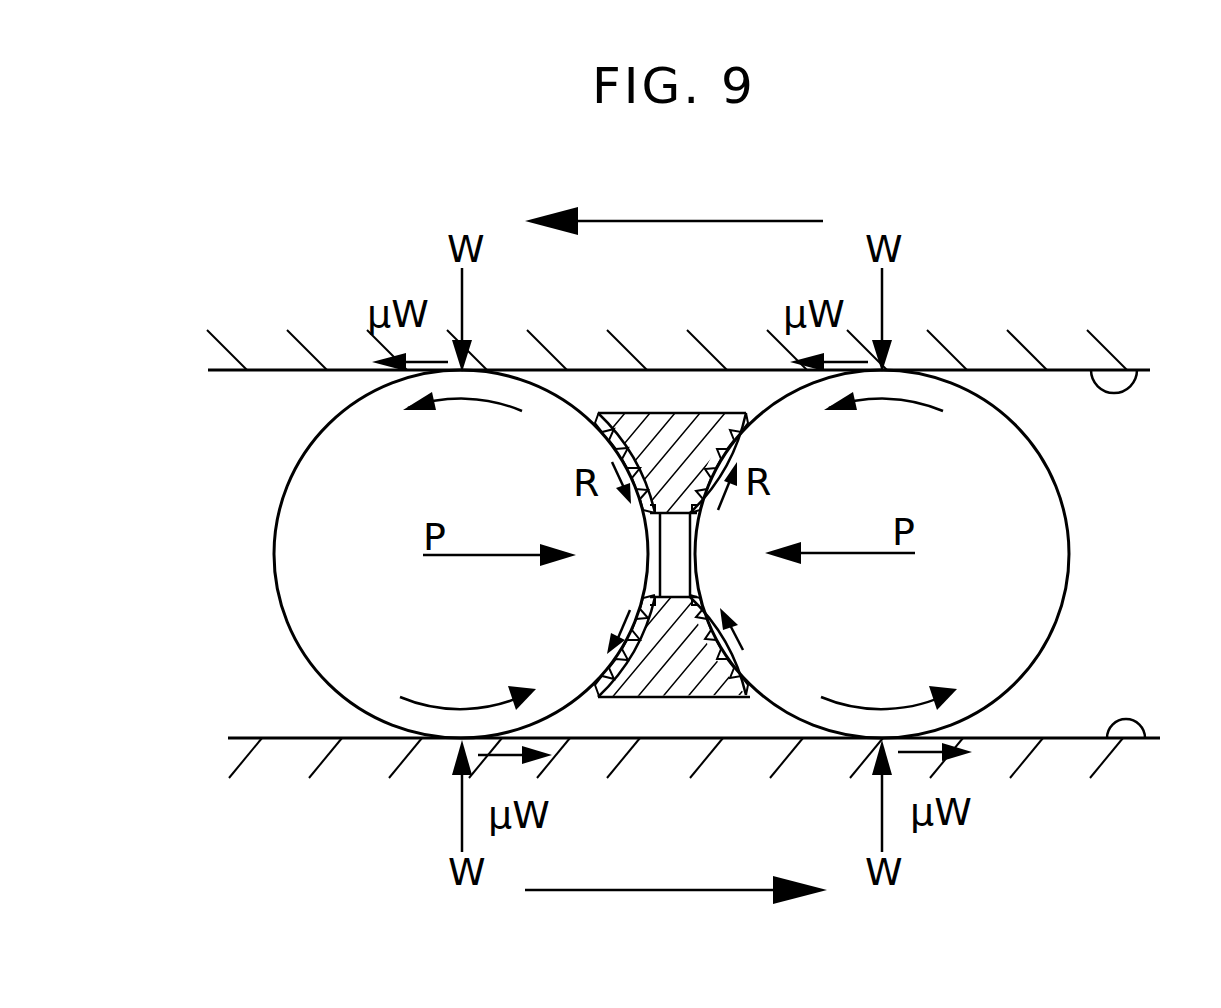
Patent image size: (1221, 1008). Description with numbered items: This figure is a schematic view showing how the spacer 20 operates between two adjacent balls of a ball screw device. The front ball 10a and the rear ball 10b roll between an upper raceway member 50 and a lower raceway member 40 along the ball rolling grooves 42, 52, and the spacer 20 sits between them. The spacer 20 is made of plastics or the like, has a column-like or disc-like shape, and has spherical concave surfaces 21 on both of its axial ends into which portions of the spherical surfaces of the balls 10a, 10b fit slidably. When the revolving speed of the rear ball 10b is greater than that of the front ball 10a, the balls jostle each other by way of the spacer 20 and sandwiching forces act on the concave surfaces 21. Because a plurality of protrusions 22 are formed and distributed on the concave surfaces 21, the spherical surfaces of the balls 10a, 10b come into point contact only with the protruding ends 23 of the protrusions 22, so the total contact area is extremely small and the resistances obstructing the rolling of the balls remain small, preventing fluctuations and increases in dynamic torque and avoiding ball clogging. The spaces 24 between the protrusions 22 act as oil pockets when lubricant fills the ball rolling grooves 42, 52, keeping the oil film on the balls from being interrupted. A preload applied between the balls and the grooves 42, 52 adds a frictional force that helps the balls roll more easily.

The front ball 10a is at (316, 500).
The rear ball 10b is at (1040, 500).
The spacer 20 is at (680, 632).
The concave surfaces 21 is at (617, 662).
The protrusions 22 is at (652, 602).
The protruding ends 23 is at (645, 507).
The spaces 24 is at (605, 441).
The lower raceway 40 is at (1060, 758).
The ball rolling groove 42 is at (1145, 738).
The upper raceway 50 is at (1050, 327).
The ball rolling groove 52 is at (1137, 370).